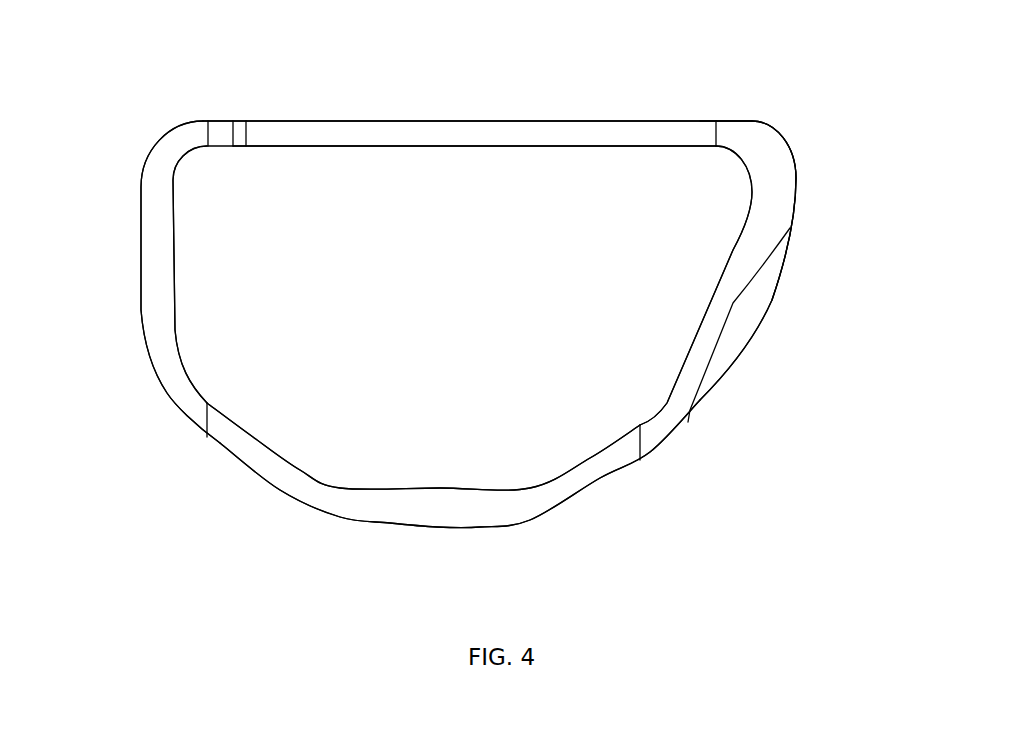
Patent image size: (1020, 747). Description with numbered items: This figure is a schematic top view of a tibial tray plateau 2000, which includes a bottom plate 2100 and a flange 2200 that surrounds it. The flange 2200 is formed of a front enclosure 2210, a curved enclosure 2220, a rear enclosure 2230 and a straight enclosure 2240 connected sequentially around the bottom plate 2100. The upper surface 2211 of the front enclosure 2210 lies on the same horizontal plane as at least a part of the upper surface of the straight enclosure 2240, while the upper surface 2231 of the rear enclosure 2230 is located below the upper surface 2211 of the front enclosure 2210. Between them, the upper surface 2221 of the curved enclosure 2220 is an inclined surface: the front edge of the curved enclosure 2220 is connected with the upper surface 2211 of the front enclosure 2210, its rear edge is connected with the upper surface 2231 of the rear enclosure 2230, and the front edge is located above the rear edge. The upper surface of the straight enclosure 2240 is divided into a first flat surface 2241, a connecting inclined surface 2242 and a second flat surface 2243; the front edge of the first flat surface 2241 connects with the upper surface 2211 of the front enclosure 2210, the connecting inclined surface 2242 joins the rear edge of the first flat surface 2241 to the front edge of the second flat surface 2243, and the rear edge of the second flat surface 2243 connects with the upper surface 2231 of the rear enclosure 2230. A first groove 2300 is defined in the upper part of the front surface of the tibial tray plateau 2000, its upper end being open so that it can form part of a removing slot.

The tibial tray plateau 2000 is at (416, 324).
The bottom plate 2100 is at (462, 245).
The flange 2200 is at (811, 173).
The front enclosure 2210 is at (811, 260).
The upper surface of the front enclosure 2211 is at (791, 285).
The curved enclosure 2220 is at (460, 494).
The upper surface of the curved enclosure 2221 is at (423, 496).
The rear enclosure 2230 is at (127, 282).
The upper surface of the rear enclosure 2231 is at (119, 264).
The straight enclosure 2240 is at (477, 68).
The first flat surface 2241 is at (481, 81).
The connecting inclined surface 2242 is at (282, 81).
The second flat surface 2243 is at (178, 86).
The first groove 2300 is at (764, 329).